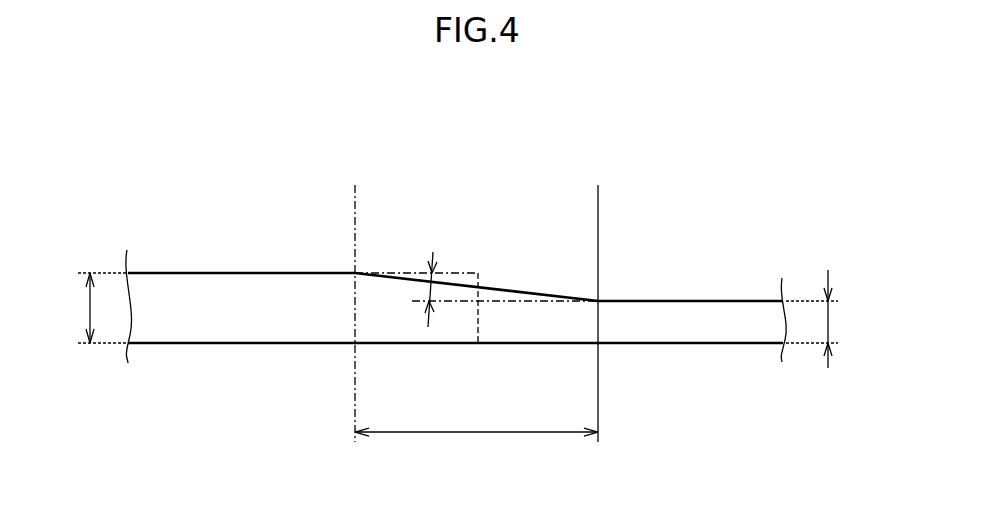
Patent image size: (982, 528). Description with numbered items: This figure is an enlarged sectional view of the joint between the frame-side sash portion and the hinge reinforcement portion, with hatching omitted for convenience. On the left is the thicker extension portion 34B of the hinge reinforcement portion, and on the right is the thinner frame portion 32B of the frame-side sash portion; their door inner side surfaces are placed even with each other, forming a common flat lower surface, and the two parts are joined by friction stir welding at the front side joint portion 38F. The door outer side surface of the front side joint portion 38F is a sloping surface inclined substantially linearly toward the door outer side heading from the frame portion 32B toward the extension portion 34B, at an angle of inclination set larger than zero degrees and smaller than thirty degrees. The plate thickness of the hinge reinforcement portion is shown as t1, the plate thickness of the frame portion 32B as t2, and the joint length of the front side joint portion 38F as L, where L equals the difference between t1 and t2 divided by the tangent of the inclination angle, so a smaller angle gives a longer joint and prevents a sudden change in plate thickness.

The extension portion 34B is at (207, 272).
The frame portion 32B is at (700, 300).
The front side joint portion 38F is at (598, 179).
The plate thickness of the hinge reinforcement portion t1 is at (89, 307).
The plate thickness of the frame portion t2 is at (829, 322).
The joint length L is at (464, 434).